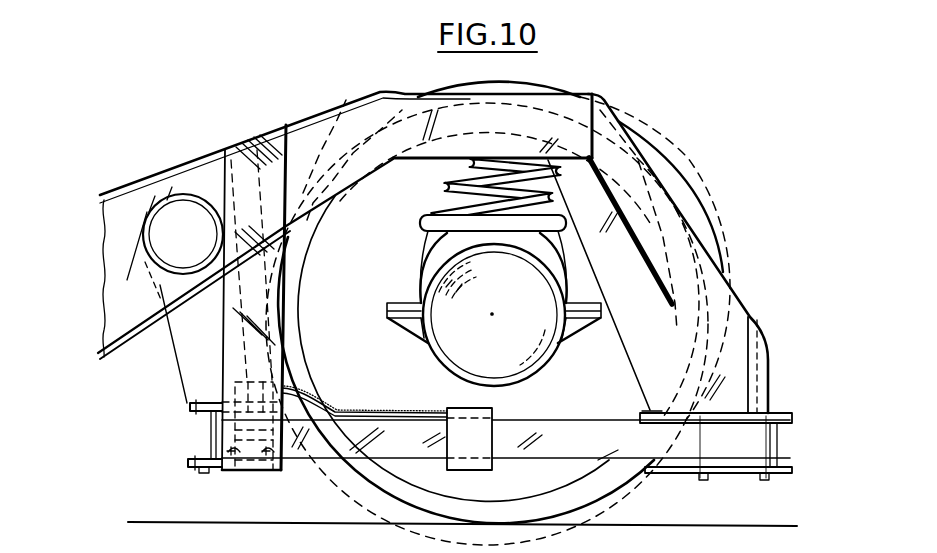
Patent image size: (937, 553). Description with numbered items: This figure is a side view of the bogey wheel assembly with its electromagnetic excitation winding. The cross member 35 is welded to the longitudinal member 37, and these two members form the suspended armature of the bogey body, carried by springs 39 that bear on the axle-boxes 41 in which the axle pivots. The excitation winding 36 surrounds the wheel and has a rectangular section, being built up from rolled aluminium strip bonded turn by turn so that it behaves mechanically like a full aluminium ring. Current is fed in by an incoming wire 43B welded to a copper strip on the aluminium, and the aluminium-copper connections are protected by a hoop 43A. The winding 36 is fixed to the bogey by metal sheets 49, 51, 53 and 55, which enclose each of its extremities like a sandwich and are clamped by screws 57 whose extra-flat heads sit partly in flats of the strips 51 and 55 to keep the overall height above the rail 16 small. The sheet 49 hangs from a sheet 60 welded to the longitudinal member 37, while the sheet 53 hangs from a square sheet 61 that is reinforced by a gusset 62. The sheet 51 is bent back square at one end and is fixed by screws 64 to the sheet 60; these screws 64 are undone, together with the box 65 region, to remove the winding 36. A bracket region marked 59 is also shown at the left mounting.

The rail 16 is at (688, 525).
The cross member 35 is at (184, 217).
The excitation winding 36 is at (318, 460).
The longitudinal member 37 is at (337, 127).
The springs 39 is at (443, 186).
The axle-box 41 is at (498, 308).
The protective hoop 43A is at (480, 440).
The incoming wire 43B is at (406, 412).
The metal sheet 49 is at (188, 408).
The metal sheet 51 is at (188, 461).
The metal sheet 53 is at (788, 410).
The metal sheet 55 is at (787, 470).
The screws 57 is at (221, 474).
The bracket 59 is at (203, 329).
The sheet 60 is at (230, 357).
The square sheet 61 is at (738, 313).
The gusset 62 is at (665, 207).
The screws 64 is at (252, 445).
The box 65 is at (236, 385).